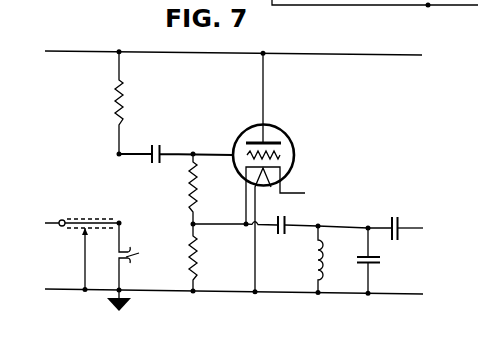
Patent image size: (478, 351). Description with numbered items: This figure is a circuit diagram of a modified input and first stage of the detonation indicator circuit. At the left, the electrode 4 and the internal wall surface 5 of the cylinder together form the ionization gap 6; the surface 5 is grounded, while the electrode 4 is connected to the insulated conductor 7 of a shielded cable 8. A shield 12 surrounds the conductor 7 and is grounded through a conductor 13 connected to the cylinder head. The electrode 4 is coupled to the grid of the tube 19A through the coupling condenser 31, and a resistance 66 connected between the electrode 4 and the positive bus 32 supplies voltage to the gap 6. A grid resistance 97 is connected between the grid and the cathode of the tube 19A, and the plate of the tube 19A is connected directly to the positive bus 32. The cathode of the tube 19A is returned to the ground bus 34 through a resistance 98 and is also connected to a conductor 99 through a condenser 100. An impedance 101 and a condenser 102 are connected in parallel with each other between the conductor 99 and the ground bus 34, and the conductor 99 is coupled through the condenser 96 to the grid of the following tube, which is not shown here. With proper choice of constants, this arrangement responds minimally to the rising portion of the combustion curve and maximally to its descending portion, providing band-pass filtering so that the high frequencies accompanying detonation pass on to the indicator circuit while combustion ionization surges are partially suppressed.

The positive bus 32 is at (210, 42).
The resistance 66 is at (115, 104).
The coupling condenser 31 is at (159, 126).
The tube 19A is at (293, 145).
The grid resistance 97 is at (190, 191).
The resistance 98 is at (197, 263).
The conductor 99 is at (337, 226).
The condenser 100 is at (285, 236).
The condenser 96 is at (395, 216).
The impedance 101 is at (322, 252).
The condenser 102 is at (383, 258).
The ground bus 34 is at (221, 292).
The shielded cable 8 is at (78, 206).
The insulated conductor 7 is at (48, 222).
The shield 12 is at (76, 230).
The conductor 13 is at (85, 258).
The electrode 4 is at (123, 252).
The internal wall surface 5 is at (123, 259).
The ionization gap 6 is at (136, 258).